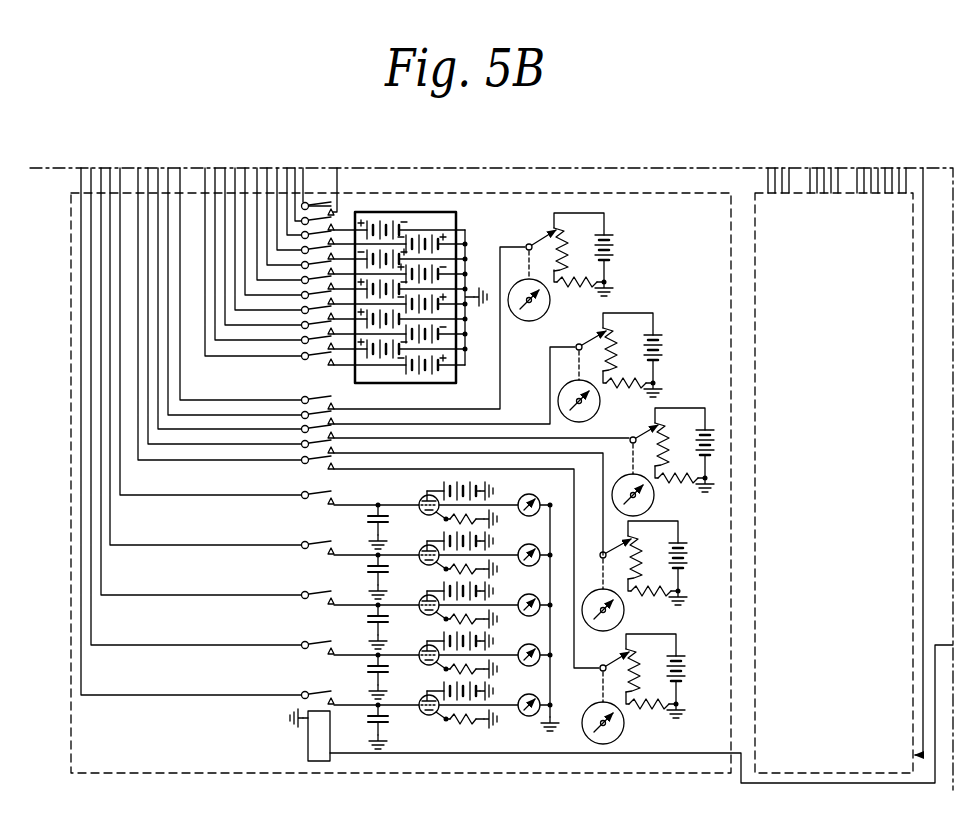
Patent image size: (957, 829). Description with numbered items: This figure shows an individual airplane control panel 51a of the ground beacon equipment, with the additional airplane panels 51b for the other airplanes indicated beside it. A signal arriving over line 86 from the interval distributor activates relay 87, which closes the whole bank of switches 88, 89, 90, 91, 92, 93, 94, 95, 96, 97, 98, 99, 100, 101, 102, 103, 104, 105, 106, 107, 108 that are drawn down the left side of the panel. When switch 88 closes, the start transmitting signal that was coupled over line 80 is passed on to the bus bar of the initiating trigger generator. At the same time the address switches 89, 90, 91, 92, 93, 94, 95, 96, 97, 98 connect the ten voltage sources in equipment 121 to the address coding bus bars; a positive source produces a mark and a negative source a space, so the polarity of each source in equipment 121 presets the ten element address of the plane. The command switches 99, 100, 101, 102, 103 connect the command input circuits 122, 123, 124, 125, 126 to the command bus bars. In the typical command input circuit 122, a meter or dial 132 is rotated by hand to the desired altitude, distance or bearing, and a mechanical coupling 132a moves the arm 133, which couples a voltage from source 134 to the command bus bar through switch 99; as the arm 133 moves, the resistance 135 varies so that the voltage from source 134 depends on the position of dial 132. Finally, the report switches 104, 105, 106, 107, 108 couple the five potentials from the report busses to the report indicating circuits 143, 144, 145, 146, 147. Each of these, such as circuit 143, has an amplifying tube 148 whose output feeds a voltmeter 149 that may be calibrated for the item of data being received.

The airplane panel 51a is at (66, 626).
The additional airplane panels 51b is at (752, 206).
The line 80 is at (339, 182).
The line 86 is at (525, 753).
The relay 87 is at (307, 744).
The switch 88 is at (318, 195).
The address switch 89 is at (333, 227).
The address switch 90 is at (320, 236).
The address switch 91 is at (320, 251).
The address switch 92 is at (320, 266).
The address switch 93 is at (320, 281).
The address switch 94 is at (320, 296).
The address switch 95 is at (320, 311).
The address switch 96 is at (320, 326).
The address switch 97 is at (320, 341).
The address switch 98 is at (320, 357).
The command switch 99 is at (336, 403).
The command switch 100 is at (336, 418).
The command switch 101 is at (336, 432).
The command switch 102 is at (336, 447).
The command switch 103 is at (336, 463).
The report switch 104 is at (331, 500).
The report switch 105 is at (331, 550).
The report switch 106 is at (331, 600).
The report switch 107 is at (331, 650).
The report switch 108 is at (331, 700).
The voltage source equipment 121 is at (457, 215).
The command input circuit 122 is at (582, 257).
The command input circuit 123 is at (657, 311).
The command input circuit 124 is at (710, 412).
The command input circuit 125 is at (684, 540).
The command input circuit 126 is at (685, 651).
The meter or dial 132 is at (549, 305).
The mechanical coupling 132a is at (527, 262).
The moving arm 133 is at (552, 231).
The voltage source 134 is at (616, 249).
The resistance 135 is at (576, 214).
The report indicating circuit 143 is at (544, 499).
The report indicating circuit 144 is at (544, 549).
The report indicating circuit 145 is at (544, 597).
The report indicating circuit 146 is at (544, 649).
The report indicating circuit 147 is at (544, 697).
The amplifying tube 148 is at (421, 498).
The voltmeter 149 is at (538, 498).